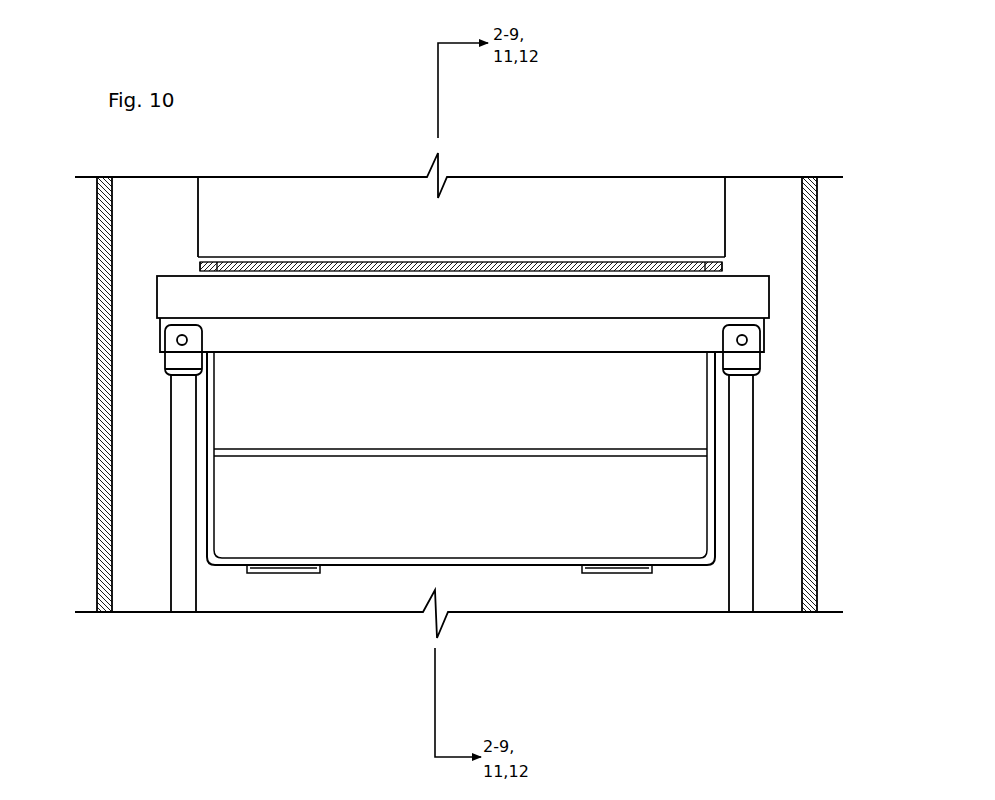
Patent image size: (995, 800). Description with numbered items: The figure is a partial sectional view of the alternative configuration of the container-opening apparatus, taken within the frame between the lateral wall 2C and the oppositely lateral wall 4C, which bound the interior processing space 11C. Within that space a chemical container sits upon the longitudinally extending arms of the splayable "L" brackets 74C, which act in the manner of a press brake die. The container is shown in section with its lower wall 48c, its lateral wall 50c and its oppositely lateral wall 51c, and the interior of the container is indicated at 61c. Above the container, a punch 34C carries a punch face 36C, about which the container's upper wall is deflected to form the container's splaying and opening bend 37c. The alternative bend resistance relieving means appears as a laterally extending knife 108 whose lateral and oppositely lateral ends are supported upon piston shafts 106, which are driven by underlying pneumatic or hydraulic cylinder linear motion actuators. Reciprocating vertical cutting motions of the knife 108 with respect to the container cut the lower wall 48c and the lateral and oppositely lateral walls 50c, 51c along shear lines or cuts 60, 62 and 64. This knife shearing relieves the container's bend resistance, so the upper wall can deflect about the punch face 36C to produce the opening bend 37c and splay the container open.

The lateral wall 2C is at (100, 540).
The oppositely lateral wall 4C is at (812, 502).
The interior processing space 11C is at (160, 585).
The punch 34C is at (503, 212).
The punch face 36C is at (217, 268).
The splaying and opening bend 37c is at (297, 265).
The lower wall 48c is at (465, 535).
The lateral wall 50c is at (216, 437).
The oppositely lateral wall 51c is at (705, 417).
The shear line 60 is at (210, 490).
The container interior 61c is at (486, 419).
The shear line 62 is at (717, 460).
The shear line 64 is at (493, 565).
The "L" bracket 74C is at (278, 575).
The piston shaft 106 is at (175, 410).
The knife 108 is at (565, 303).